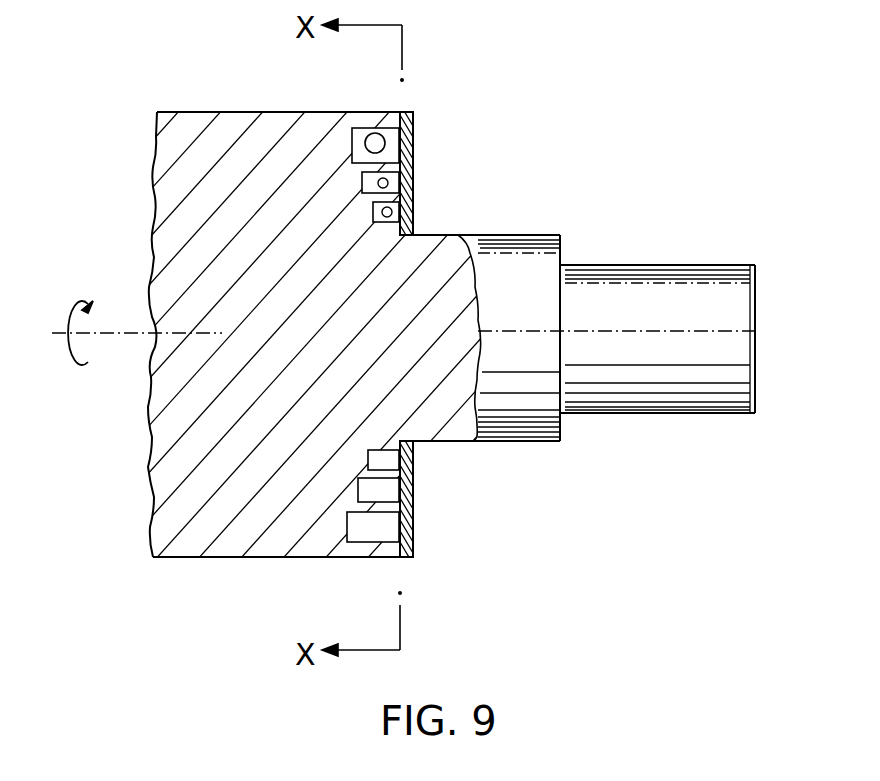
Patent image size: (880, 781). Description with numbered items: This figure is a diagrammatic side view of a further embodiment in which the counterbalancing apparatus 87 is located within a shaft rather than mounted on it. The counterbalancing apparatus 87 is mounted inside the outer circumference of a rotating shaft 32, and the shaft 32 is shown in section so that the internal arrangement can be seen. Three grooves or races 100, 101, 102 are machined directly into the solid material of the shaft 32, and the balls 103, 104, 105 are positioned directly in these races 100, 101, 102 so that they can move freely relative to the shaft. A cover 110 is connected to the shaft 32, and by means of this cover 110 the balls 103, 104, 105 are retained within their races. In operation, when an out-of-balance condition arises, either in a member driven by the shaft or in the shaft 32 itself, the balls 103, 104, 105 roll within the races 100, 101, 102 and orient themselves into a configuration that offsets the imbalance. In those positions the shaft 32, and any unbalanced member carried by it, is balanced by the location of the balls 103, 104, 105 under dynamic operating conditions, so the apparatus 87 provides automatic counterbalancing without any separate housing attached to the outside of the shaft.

The rotating shaft 32 is at (243, 558).
The counterbalancing apparatus 87 is at (208, 97).
The groove or race 100 is at (417, 153).
The groove or race 101 is at (417, 184).
The groove or race 102 is at (417, 213).
The ball 103 is at (373, 131).
The ball 104 is at (362, 186).
The ball 105 is at (373, 213).
The cover 110 is at (413, 518).